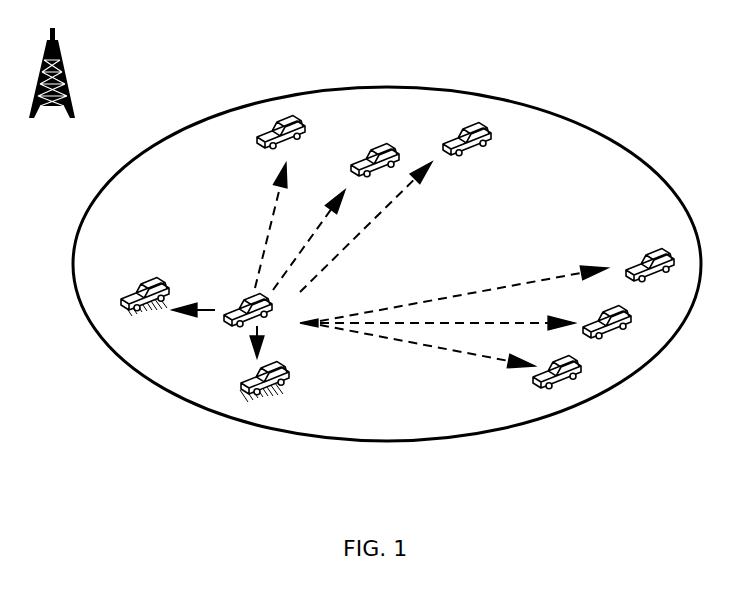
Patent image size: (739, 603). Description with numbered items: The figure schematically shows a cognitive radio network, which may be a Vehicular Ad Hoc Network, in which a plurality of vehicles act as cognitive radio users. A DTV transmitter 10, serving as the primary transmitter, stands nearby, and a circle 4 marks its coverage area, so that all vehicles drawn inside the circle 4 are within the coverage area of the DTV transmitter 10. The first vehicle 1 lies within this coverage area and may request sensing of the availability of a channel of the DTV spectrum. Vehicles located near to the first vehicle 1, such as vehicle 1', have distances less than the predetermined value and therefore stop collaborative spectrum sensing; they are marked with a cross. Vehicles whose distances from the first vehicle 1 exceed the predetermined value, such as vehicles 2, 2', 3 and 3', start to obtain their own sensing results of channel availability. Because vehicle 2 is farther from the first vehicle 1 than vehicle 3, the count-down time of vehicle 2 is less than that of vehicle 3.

The DTV transmitter 10 is at (110, 75).
The circle 4 is at (622, 142).
The first vehicle 1 is at (390, 265).
The vehicle 1' is at (209, 328).
The vehicle 2 is at (650, 256).
The vehicle 2' is at (574, 349).
The vehicle 3 is at (270, 132).
The vehicle 3' is at (431, 148).